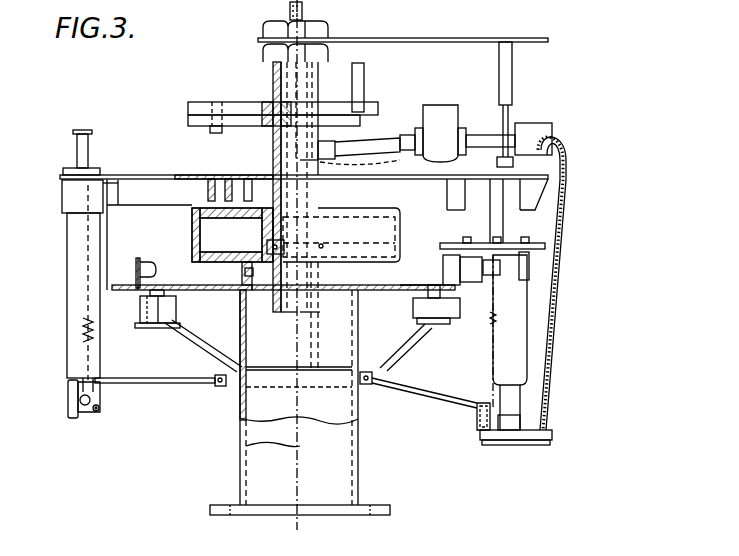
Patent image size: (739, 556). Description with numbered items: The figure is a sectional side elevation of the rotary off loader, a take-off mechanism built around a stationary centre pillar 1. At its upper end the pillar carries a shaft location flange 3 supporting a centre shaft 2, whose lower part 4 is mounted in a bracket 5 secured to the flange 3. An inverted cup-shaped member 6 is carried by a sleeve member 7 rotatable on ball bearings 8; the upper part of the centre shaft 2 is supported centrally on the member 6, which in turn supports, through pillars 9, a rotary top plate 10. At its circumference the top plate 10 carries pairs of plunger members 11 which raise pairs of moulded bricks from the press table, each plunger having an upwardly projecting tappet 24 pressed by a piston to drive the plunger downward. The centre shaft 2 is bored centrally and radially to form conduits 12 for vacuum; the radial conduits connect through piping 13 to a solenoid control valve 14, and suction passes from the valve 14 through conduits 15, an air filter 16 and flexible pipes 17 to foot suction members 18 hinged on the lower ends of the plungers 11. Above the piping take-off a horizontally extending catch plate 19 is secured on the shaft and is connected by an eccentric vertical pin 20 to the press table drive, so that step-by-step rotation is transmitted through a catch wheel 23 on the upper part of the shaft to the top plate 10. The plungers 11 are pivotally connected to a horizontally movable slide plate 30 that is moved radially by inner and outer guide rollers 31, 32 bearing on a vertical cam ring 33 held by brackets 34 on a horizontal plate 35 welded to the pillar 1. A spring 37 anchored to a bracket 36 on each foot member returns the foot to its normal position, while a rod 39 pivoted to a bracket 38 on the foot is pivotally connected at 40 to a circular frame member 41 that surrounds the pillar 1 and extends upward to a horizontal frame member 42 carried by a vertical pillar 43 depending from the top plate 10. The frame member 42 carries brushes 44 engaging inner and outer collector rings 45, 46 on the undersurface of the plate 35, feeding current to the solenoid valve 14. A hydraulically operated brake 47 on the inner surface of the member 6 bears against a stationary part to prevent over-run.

The centre pillar 1 is at (348, 478).
The centre shaft 2 is at (280, 312).
The shaft location flange 3 is at (220, 265).
The lower part of the centre shaft 4 is at (305, 313).
The bracket 5 is at (253, 275).
The inverted cup-shaped member 6 is at (192, 230).
The sleeve member 7 is at (250, 195).
The ball bearings 8 is at (324, 246).
The pillars 9 is at (205, 192).
The rotary top plate 10 is at (140, 178).
The plunger members 11 is at (75, 270).
The conduits 12 is at (356, 159).
The piping 13 is at (388, 135).
The solenoid control valve 14 is at (447, 112).
The conduits 15 is at (493, 135).
The air filter 16 is at (540, 128).
The flexible pipes 17 is at (565, 172).
The foot suction members 18 is at (70, 385).
The catch plate 19 is at (333, 105).
The vertical pin 20 is at (364, 78).
The catch wheel 23 is at (228, 118).
The tappets 24 is at (90, 140).
The slide plate 30 is at (455, 247).
The inner guide roller 31 is at (468, 262).
The outer guide roller 32 is at (490, 292).
The cam ring 33 is at (487, 303).
The brackets 34 is at (150, 278).
The horizontal plate 35 is at (152, 290).
The bracket 36 is at (82, 418).
The spring 37 is at (88, 360).
The bracket 38 is at (478, 432).
The rod 39 is at (447, 408).
The pivot connection 40 is at (372, 384).
The circular frame member 41 is at (372, 398).
The horizontal frame member 42 is at (118, 355).
The vertical pillar 43 is at (105, 250).
The brushes 44 is at (170, 290).
The inner collector ring 45 is at (145, 300).
The outer collector ring 46 is at (172, 325).
The brake 47 is at (205, 240).